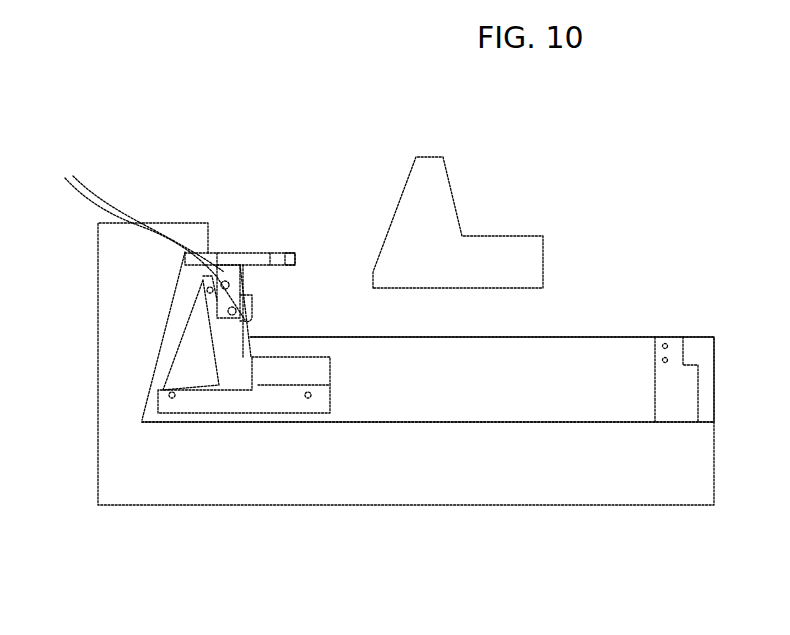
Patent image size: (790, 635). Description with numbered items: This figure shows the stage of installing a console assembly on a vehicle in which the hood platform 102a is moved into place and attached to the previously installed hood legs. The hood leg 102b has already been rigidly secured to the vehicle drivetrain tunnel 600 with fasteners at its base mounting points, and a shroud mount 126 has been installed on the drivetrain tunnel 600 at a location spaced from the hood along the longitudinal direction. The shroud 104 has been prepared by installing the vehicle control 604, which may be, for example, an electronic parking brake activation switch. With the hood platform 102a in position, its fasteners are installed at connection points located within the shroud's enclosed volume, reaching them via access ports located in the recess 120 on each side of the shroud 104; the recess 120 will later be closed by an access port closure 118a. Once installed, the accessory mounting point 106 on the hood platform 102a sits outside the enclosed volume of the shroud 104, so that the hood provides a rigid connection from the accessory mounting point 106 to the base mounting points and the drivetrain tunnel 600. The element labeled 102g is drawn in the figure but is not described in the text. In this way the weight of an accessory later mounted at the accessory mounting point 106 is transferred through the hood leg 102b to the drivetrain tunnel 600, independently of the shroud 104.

The vehicle drivetrain tunnel 600 is at (220, 472).
The shroud 104 is at (357, 407).
The recess 120 is at (248, 370).
The hood leg 102b is at (197, 383).
The hood platform 102a is at (233, 252).
The accessory mounting point 106 is at (275, 253).
The vehicle control 604 is at (253, 313).
The cables 102g is at (146, 237).
The access port closure 118a is at (490, 256).
The shroud mount 126 is at (677, 337).